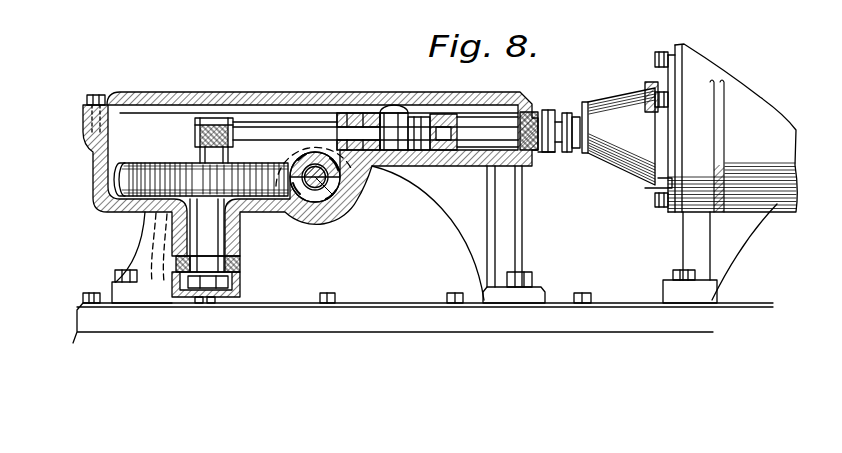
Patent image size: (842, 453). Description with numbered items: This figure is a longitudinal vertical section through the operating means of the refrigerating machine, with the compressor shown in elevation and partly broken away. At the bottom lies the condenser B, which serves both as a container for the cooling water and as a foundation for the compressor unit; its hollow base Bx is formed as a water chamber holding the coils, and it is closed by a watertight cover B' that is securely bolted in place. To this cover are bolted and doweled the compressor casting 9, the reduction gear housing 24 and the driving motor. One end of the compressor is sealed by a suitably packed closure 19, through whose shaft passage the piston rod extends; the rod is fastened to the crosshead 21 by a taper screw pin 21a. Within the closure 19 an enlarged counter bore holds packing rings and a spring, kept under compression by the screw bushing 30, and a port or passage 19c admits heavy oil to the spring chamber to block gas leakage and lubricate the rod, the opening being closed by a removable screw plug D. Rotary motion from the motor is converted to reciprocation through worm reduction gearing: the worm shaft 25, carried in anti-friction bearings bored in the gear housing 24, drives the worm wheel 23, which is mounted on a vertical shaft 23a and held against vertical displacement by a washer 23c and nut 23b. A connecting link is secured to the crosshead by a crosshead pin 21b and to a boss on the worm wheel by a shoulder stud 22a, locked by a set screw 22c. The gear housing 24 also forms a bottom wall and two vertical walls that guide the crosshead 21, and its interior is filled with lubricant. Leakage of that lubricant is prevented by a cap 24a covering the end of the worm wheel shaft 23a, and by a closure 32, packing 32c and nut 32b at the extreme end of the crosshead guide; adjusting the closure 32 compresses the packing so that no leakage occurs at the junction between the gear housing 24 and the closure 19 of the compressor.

The compressor casting 9 is at (772, 122).
The closure 19 is at (645, 172).
The port or passage 19c is at (648, 95).
The crosshead 21 is at (425, 155).
The taper screw pin 21a is at (443, 121).
The crosshead pin 21b is at (392, 106).
The shoulder stud 22a is at (204, 150).
The set screw 22c is at (244, 213).
The worm wheel 23 is at (110, 178).
The vertical shaft 23a is at (205, 242).
The nut 23b is at (242, 283).
The washer 23c is at (241, 266).
The gear housing 24 is at (100, 148).
The cap 24a is at (244, 292).
The worm shaft 25 is at (336, 203).
The screw bushing 30 is at (578, 150).
The closure 32 is at (566, 153).
The nut 32b is at (546, 160).
The packing 32c is at (547, 110).
The condenser B is at (419, 298).
The base of the condenser Bx is at (387, 332).
The watertight cover B' is at (612, 301).
The removable screw plug D is at (655, 90).